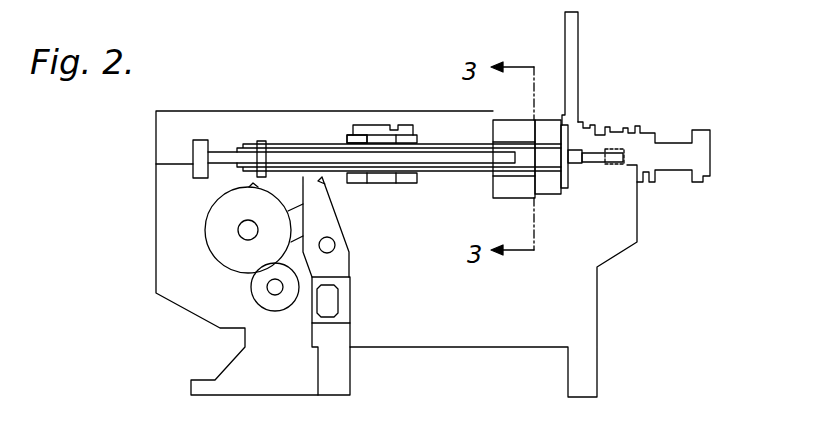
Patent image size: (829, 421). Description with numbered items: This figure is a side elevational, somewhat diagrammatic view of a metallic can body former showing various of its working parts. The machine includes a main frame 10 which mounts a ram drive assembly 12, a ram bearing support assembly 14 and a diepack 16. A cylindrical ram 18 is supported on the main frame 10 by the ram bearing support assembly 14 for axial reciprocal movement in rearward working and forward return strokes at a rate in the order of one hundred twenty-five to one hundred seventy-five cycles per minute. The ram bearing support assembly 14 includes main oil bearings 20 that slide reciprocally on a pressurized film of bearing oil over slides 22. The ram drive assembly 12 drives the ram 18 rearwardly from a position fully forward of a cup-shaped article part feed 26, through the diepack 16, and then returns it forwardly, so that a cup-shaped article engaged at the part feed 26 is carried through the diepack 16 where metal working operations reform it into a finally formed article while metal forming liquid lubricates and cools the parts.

The main frame 10 is at (153, 205).
The ram drive assembly 12 is at (205, 247).
The ram bearing support assembly 14 is at (393, 124).
The diepack 16 is at (641, 133).
The cylindrical ram 18 is at (592, 158).
The main oil bearings 20 is at (355, 137).
The slides 22 is at (230, 155).
The cup-shaped article part feed 26 is at (572, 50).